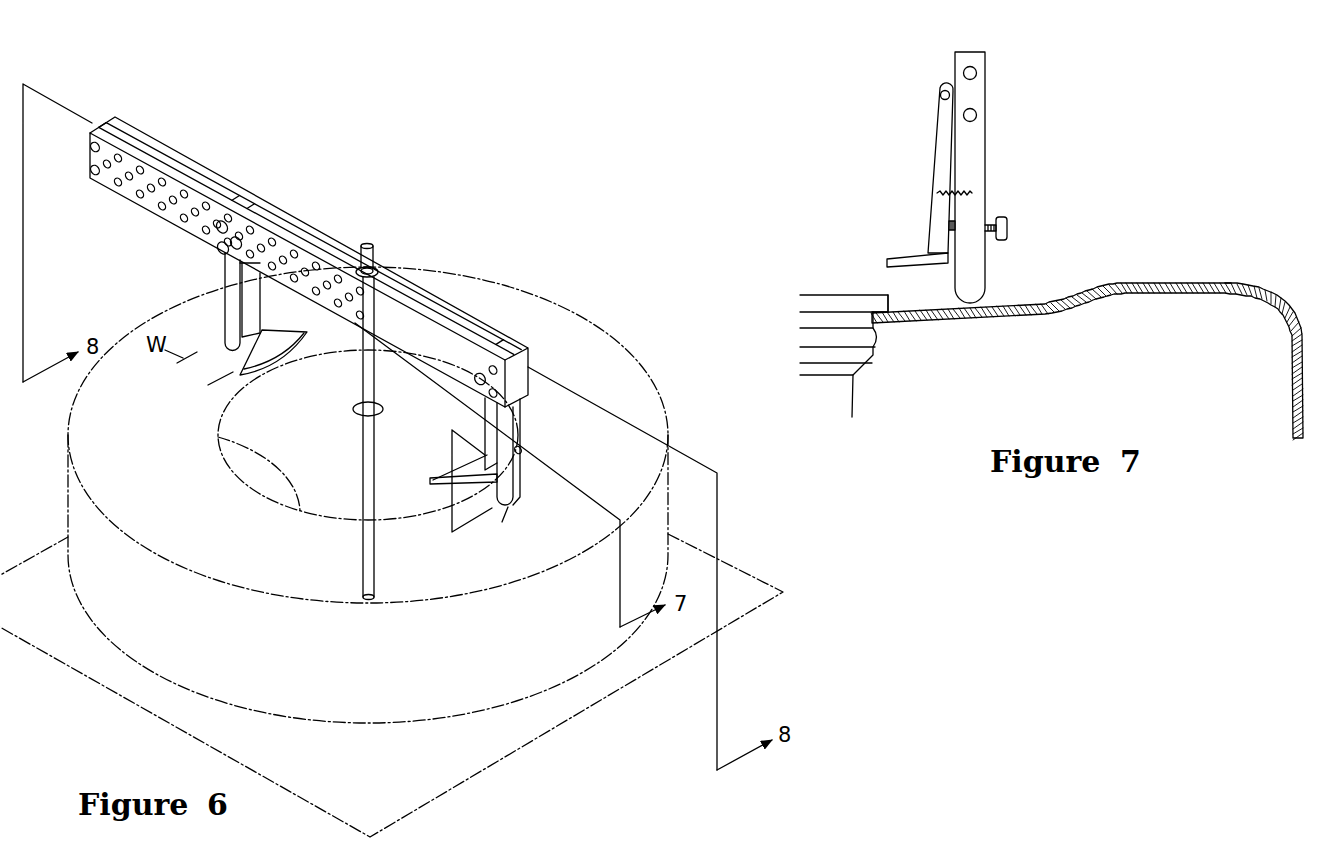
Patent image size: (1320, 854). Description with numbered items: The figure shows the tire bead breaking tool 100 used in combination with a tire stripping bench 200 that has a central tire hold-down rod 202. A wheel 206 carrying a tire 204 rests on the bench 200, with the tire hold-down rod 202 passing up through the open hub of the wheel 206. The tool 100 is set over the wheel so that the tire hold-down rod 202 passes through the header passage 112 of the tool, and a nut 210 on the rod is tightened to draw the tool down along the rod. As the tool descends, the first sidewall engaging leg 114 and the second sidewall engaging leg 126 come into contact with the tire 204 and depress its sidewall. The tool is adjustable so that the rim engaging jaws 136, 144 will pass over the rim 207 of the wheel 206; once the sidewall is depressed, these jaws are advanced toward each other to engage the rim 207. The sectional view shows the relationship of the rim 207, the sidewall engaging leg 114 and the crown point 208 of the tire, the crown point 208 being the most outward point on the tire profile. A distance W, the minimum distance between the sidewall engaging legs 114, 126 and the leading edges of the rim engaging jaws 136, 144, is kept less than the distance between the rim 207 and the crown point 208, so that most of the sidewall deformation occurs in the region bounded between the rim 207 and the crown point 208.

In FIG. 6, the tire bead breaking tool 100 is at (360, 200).
In FIG. 6, the header passage 112 is at (455, 322).
In FIG. 6, the first sidewall engaging leg 114 is at (498, 465).
In FIG. 7, the first sidewall engaging leg 114 is at (993, 160).
In FIG. 6, the second sidewall engaging leg 126 is at (252, 320).
In FIG. 6, the rim engaging jaw 136 is at (473, 456).
In FIG. 6, the rim engaging jaw 144 is at (282, 351).
In FIG. 6, the bench 200 is at (730, 585).
In FIG. 6, the tire hold-down rod 202 is at (372, 246).
In FIG. 6, the tire 204 is at (640, 360).
In FIG. 7, the tire 204 is at (1233, 282).
In FIG. 6, the wheel 206 is at (255, 457).
In FIG. 7, the wheel 206 is at (825, 292).
In FIG. 6, the rim 207 is at (218, 452).
In FIG. 7, the rim 207 is at (885, 292).
In FIG. 7, the crown point 208 is at (1178, 282).
In FIG. 6, the nut 210 is at (378, 270).